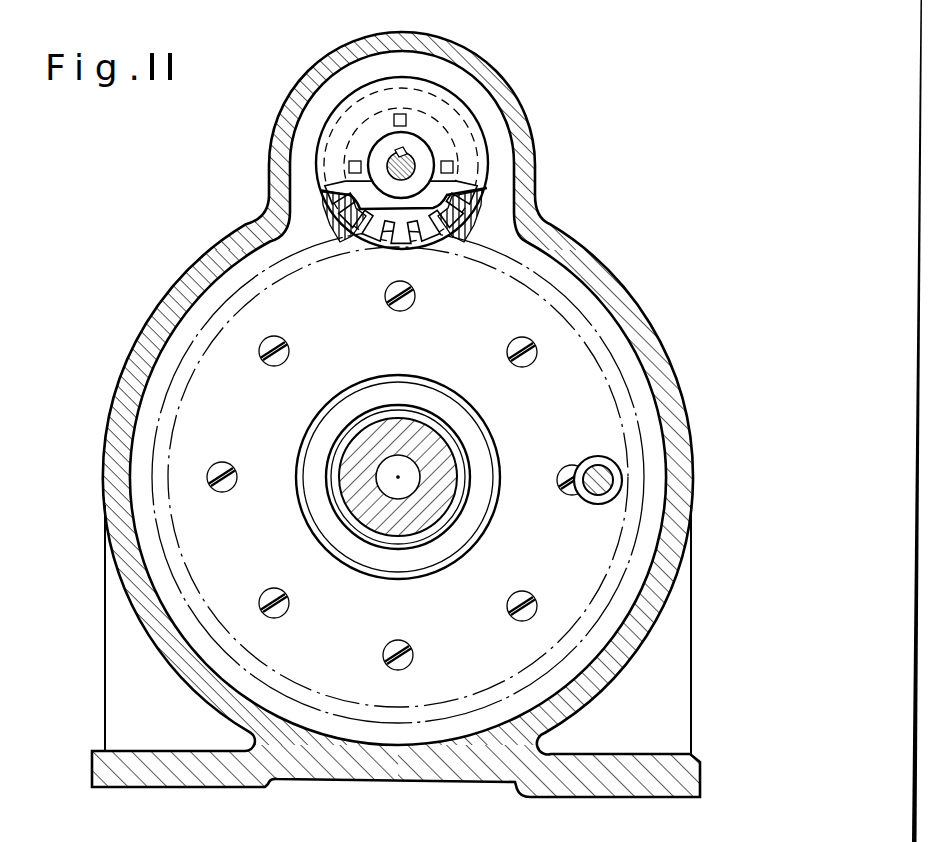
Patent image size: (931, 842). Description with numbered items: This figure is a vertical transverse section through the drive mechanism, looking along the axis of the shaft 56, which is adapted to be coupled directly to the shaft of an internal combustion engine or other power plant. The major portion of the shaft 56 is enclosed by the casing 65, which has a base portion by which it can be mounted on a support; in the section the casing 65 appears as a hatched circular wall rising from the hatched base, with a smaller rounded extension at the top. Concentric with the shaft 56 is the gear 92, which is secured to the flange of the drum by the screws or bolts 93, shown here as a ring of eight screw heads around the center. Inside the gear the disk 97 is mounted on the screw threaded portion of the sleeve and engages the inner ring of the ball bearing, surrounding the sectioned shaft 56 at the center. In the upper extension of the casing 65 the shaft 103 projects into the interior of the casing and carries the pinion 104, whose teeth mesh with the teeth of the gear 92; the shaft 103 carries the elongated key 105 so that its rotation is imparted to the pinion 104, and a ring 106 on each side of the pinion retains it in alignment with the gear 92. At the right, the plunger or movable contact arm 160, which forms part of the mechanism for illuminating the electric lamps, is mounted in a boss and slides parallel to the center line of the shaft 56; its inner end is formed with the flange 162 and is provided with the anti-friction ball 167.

The casing 65 is at (190, 272).
The gear 92 is at (503, 275).
The screws or bolts 93 is at (395, 308).
The disk 97 is at (439, 400).
The shaft 56 is at (362, 435).
The shaft 103 is at (404, 163).
The pinion 104 is at (437, 218).
The elongated key 105 is at (398, 158).
The ring 106 is at (330, 203).
The plunger or movable contact arm 160 is at (597, 493).
The flange 162 is at (585, 467).
The ball 167 is at (595, 462).